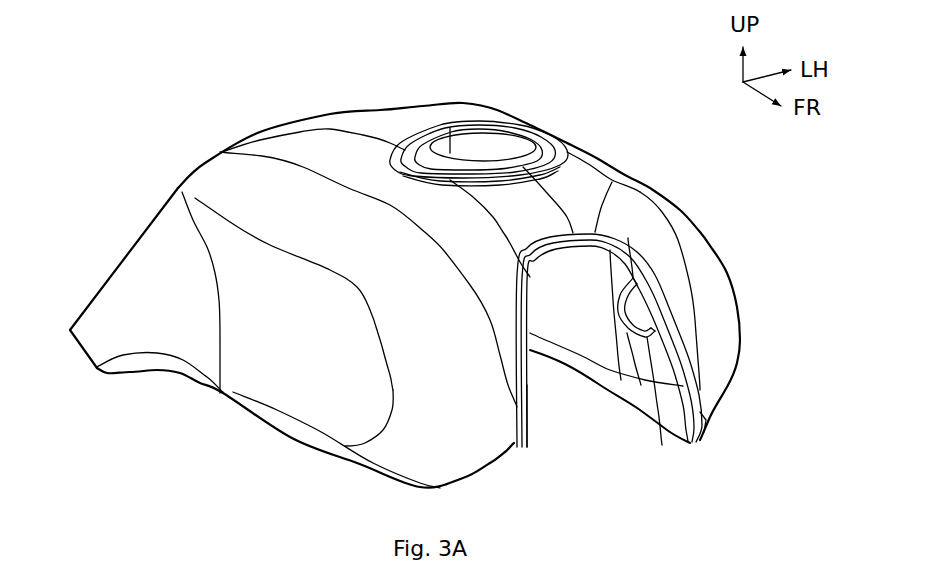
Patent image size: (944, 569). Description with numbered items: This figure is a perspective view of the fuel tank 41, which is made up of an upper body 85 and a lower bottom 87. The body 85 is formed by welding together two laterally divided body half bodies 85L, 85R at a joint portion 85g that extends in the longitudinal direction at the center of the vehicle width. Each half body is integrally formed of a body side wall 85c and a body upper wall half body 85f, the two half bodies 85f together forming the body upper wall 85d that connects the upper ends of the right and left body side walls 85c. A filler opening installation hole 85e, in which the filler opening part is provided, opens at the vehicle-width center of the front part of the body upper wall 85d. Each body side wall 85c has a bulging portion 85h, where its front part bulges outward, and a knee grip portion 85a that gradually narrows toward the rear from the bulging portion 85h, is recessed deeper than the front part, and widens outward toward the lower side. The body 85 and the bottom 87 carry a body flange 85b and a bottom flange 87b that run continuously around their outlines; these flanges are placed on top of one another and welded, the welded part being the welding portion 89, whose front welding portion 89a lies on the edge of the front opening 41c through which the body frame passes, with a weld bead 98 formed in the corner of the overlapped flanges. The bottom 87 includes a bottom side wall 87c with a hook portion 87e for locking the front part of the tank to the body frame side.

The body 85 is at (350, 107).
The body half body 85R is at (200, 157).
The body half body 85L is at (463, 105).
The body upper wall half body 85f is at (293, 143).
The body upper wall 85d is at (387, 125).
The filler opening installation hole 85e is at (510, 138).
The fuel tank 41 is at (568, 98).
The joint portion 85g is at (580, 160).
The body flange 85b is at (604, 200).
The bottom flange 87b is at (632, 230).
The body side wall 85c is at (703, 230).
The welding portion 89 is at (683, 320).
The front welding portion 89a is at (708, 383).
The weld bead 98 is at (707, 417).
The hook portion 87e is at (660, 400).
The bottom side wall 87c is at (635, 393).
The bottom 87 is at (590, 390).
The front opening 41c is at (532, 386).
The bulging portion 85h is at (392, 450).
The knee grip portion 85a is at (157, 338).